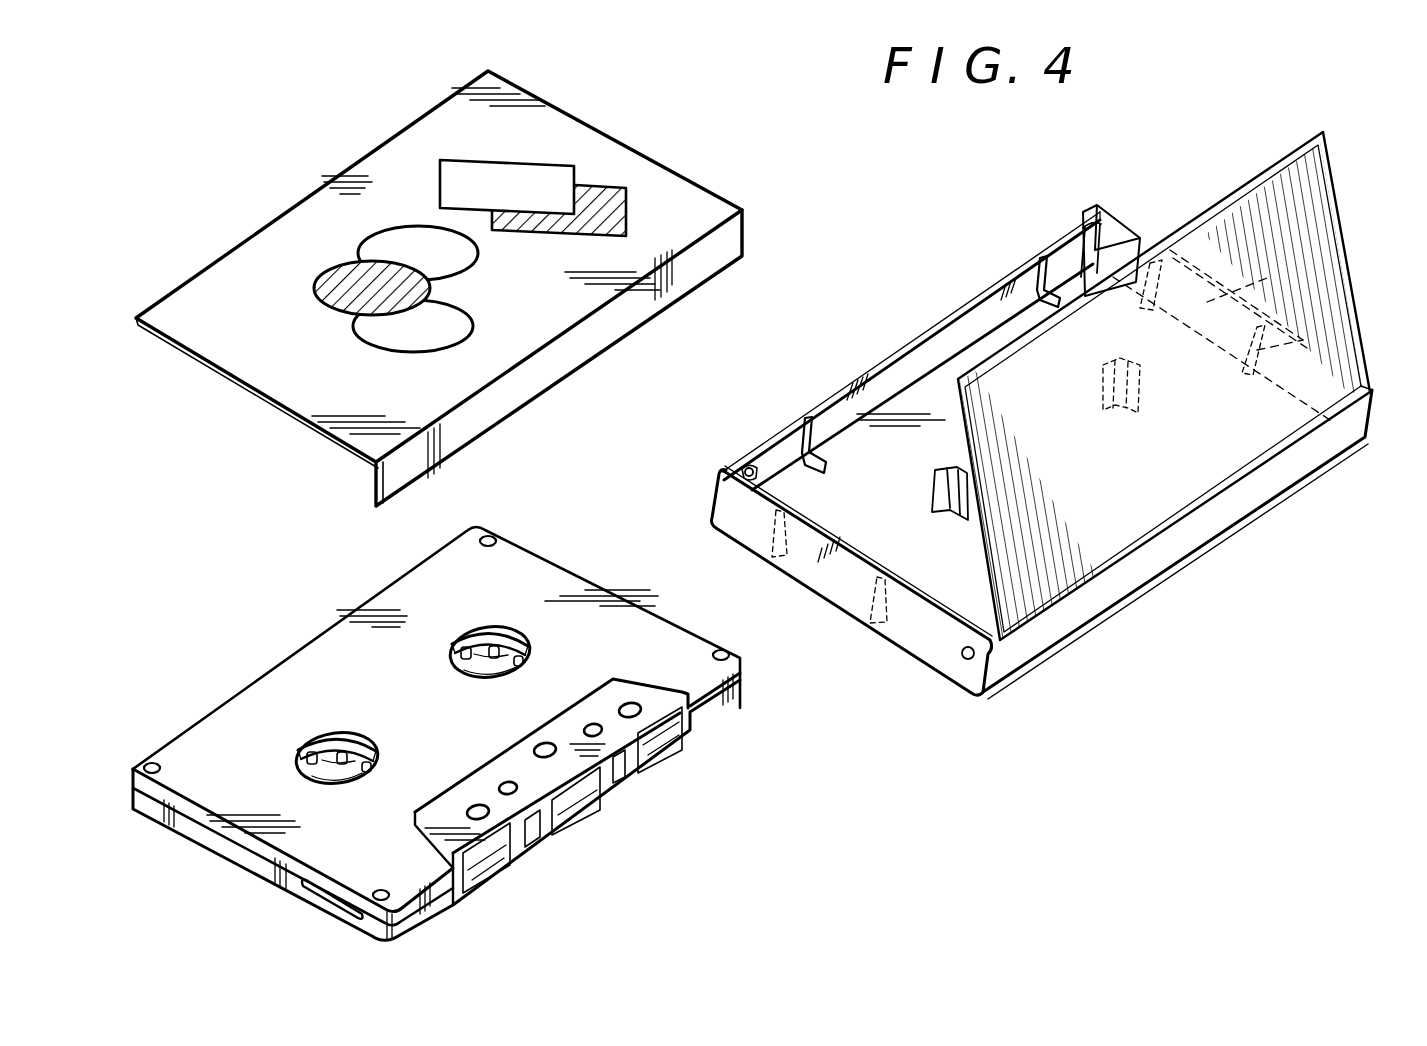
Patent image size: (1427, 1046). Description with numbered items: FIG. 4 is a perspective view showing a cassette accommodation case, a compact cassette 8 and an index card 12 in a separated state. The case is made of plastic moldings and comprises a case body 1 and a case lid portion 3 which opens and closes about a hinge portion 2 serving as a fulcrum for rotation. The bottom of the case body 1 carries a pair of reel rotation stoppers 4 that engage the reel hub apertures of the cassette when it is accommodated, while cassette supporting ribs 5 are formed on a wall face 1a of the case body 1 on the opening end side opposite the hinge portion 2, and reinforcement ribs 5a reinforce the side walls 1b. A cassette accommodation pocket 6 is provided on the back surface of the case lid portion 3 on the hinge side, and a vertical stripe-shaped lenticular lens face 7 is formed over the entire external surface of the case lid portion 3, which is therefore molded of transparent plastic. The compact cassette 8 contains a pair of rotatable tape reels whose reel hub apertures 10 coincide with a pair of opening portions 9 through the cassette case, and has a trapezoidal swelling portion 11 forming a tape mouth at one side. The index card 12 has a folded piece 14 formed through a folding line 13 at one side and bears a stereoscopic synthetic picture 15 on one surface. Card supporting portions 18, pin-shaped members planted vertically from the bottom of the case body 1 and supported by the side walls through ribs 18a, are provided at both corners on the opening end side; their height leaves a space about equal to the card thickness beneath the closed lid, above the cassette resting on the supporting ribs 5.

The case body 1 is at (907, 657).
The wall face 1a is at (920, 353).
The side walls 1b is at (743, 523).
The hinge portion 2 is at (968, 659).
The case lid portion 3 is at (1348, 258).
The reel rotation stoppers 4 is at (930, 500).
The cassette supporting ribs 5 is at (800, 450).
The reinforcement ribs 5a is at (788, 516).
The cassette accommodation pocket 6 is at (1052, 578).
The lenticular lens face 7 is at (1083, 577).
The compact cassette 8 is at (257, 875).
The opening portions 9 is at (322, 737).
The reel hub apertures 10 is at (323, 750).
The swelling portion 11 is at (560, 760).
The index card 12 is at (266, 400).
The folding line 13 is at (570, 332).
The folded piece 14 is at (522, 390).
The stereoscopic synthetic picture 15 is at (524, 186).
The card supporting portions 18 is at (745, 470).
The ribs 18a is at (1110, 250).